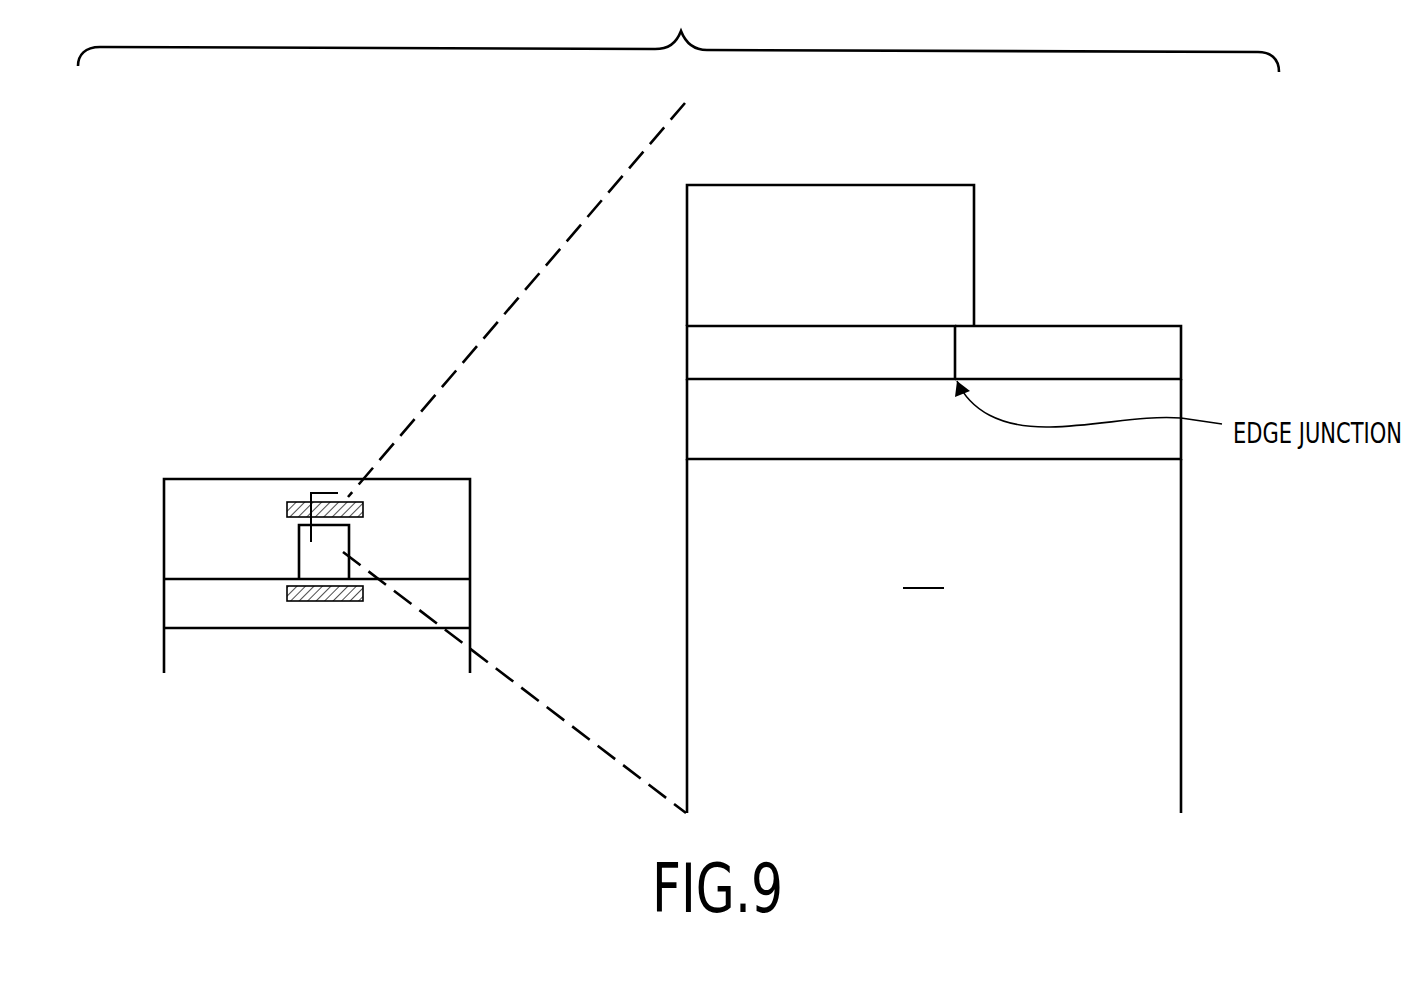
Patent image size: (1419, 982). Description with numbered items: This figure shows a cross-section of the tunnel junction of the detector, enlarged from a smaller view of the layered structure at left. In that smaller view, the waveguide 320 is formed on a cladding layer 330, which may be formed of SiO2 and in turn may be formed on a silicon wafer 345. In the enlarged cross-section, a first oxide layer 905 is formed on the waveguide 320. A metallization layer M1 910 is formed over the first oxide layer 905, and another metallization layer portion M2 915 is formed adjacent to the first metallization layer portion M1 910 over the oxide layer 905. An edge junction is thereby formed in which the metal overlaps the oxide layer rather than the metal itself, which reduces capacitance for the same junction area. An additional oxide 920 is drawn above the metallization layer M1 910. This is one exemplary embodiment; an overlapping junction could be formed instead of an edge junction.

The waveguide 320 is at (305, 555).
The cladding layer 330 is at (175, 607).
The silicon wafer 345 is at (178, 650).
The first oxide layer 905 is at (867, 447).
The metallization layer M1 910 is at (806, 370).
The metallization layer portion M2 915 is at (1099, 370).
The oxide layer 920 is at (887, 254).